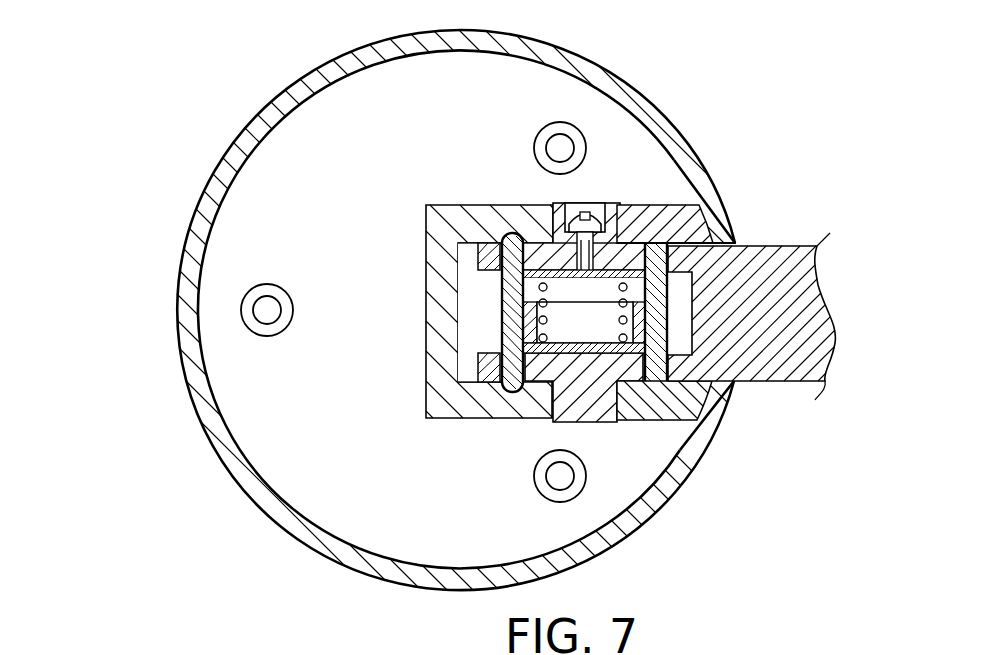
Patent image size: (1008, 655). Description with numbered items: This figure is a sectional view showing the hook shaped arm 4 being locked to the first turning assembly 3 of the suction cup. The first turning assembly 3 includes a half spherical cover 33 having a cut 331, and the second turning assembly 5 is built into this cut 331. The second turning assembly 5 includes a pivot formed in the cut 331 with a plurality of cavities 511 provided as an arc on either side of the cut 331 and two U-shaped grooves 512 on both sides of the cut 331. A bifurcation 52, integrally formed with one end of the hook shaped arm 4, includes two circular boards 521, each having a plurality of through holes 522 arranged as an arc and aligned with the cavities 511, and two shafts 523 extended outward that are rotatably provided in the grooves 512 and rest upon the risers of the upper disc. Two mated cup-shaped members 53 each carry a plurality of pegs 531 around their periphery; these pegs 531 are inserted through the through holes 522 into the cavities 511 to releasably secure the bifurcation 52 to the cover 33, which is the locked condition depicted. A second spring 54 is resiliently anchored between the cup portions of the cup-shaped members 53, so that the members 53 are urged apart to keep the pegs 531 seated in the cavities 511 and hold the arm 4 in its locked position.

The first turning assembly 3 is at (398, 310).
The half spherical cover 33 is at (190, 253).
The cut 331 is at (478, 258).
The hook shaped arm 4 is at (751, 285).
The second turning assembly 5 is at (459, 322).
The cavities 511 is at (622, 243).
The U-shaped grooves 512 is at (685, 445).
The bifurcation 52 is at (434, 322).
The circular boards 521 is at (488, 258).
The through holes 522 is at (505, 238).
The shafts 523 is at (602, 424).
The cup-shaped members 53 is at (738, 243).
The pegs 531 is at (712, 241).
The second spring 54 is at (427, 318).